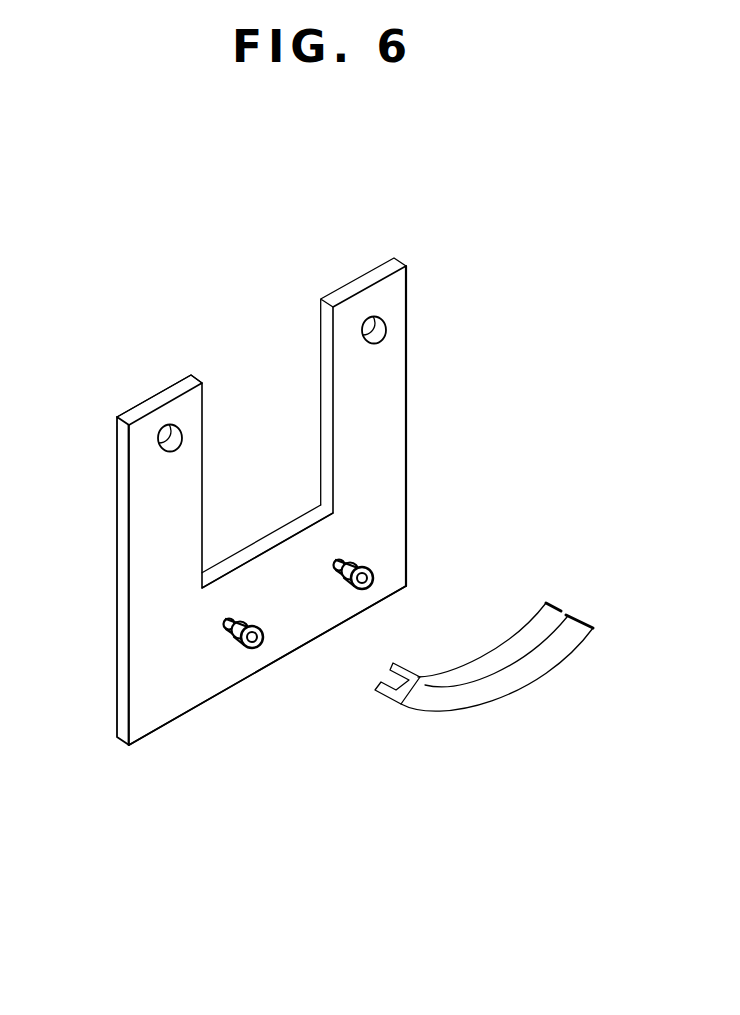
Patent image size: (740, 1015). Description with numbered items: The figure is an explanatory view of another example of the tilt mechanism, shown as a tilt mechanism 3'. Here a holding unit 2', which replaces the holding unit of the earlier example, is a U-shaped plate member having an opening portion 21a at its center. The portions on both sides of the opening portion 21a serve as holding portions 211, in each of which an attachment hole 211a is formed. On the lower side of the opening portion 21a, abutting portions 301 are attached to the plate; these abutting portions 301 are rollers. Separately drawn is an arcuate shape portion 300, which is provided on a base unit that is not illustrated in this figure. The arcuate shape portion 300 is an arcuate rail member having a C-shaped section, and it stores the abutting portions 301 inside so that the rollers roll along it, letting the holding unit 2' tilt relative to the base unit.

The holding unit 2' is at (240, 505).
The opening portion 21a is at (267, 369).
The holding portions 211 is at (152, 458).
The attachment holes 211a is at (182, 431).
The abutting portions 301 is at (260, 647).
The arcuate shape portion 300 is at (512, 648).
The tilt mechanism 3' is at (267, 724).